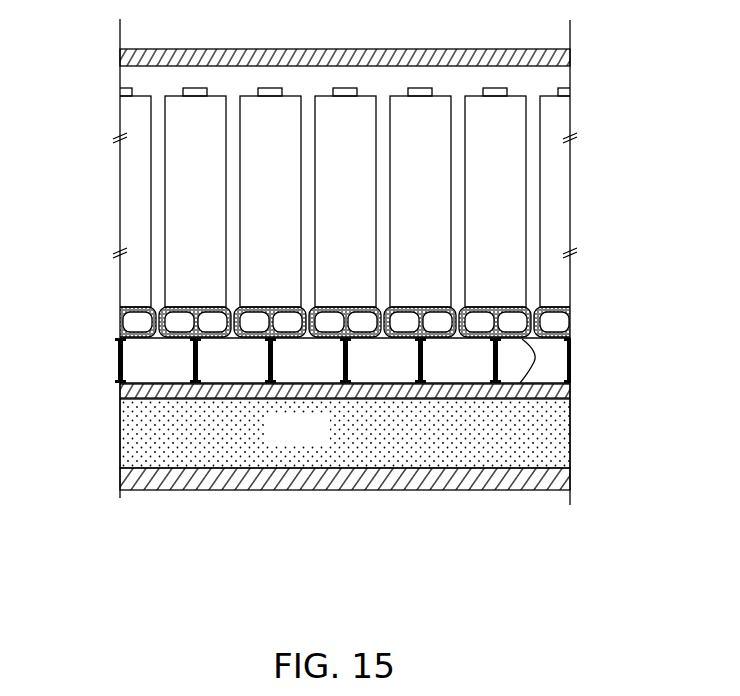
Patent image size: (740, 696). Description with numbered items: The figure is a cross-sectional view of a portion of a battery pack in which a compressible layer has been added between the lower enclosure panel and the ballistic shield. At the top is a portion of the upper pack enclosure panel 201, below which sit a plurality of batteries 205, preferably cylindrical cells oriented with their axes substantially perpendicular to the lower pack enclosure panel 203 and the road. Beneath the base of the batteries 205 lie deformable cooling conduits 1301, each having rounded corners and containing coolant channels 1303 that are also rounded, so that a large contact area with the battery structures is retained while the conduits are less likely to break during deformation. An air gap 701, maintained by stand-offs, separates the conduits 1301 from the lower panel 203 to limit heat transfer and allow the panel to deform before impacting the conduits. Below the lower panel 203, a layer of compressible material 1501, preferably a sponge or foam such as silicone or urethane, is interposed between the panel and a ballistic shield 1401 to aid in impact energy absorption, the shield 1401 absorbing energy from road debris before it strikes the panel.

The upper pack enclosure panel 201 is at (242, 56).
The batteries 205 is at (515, 208).
The conduit 1301 is at (262, 307).
The channel 1303 is at (506, 320).
The air gap 701 is at (533, 362).
The lower pack enclosure panel 203 is at (570, 393).
The layer of compressible material 1501 is at (323, 441).
The ballistic shield 1401 is at (462, 483).